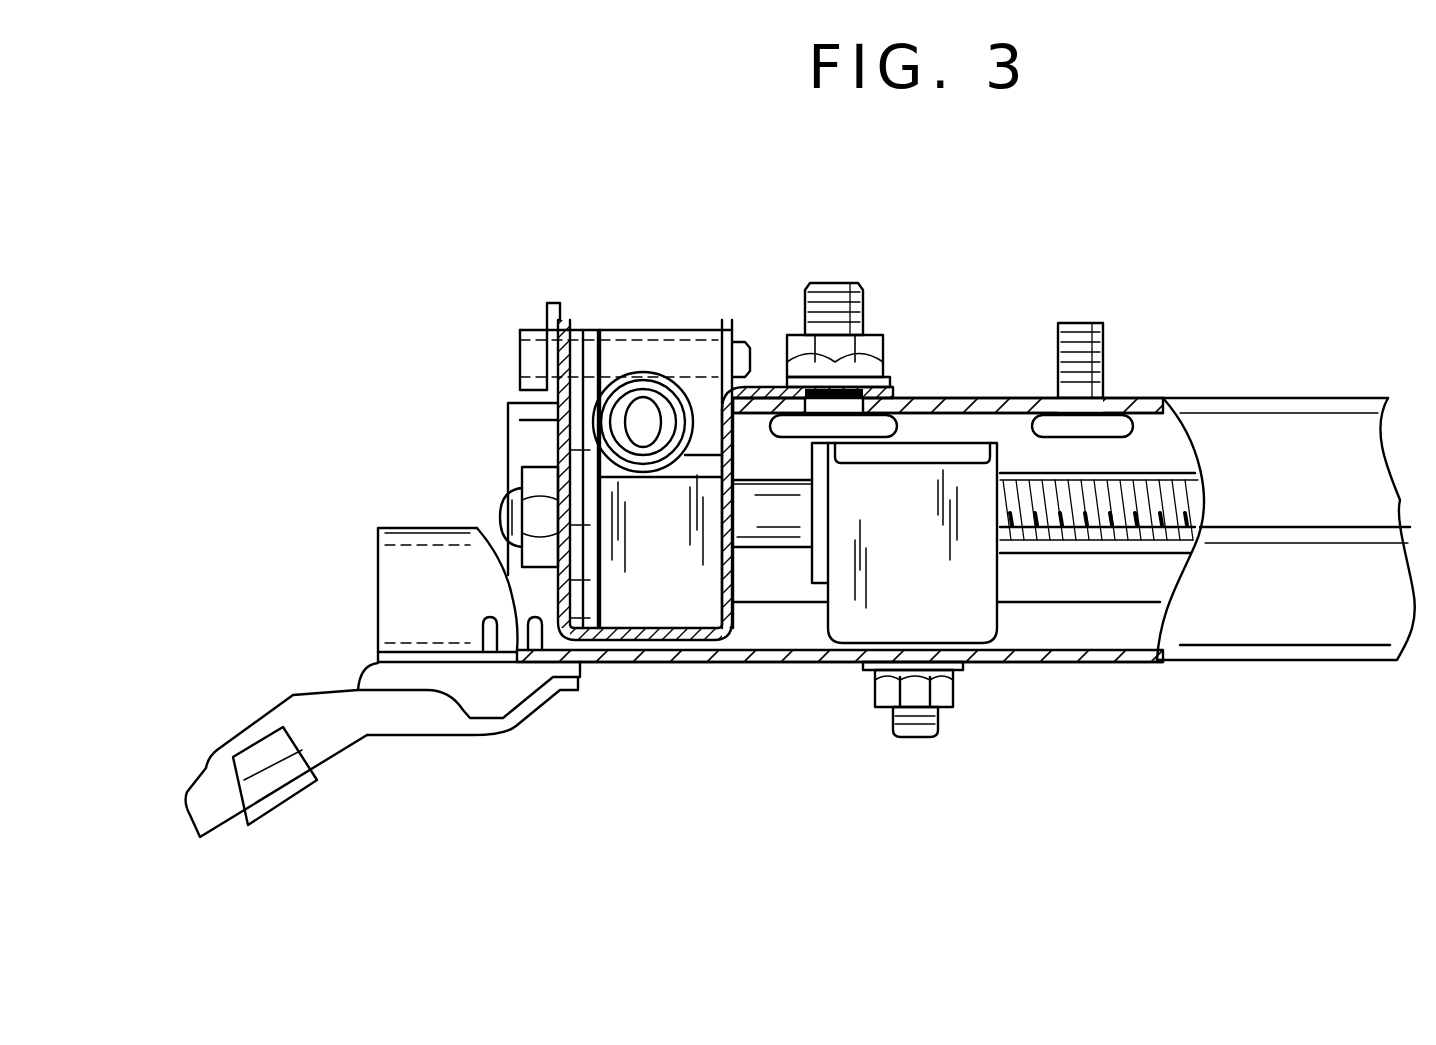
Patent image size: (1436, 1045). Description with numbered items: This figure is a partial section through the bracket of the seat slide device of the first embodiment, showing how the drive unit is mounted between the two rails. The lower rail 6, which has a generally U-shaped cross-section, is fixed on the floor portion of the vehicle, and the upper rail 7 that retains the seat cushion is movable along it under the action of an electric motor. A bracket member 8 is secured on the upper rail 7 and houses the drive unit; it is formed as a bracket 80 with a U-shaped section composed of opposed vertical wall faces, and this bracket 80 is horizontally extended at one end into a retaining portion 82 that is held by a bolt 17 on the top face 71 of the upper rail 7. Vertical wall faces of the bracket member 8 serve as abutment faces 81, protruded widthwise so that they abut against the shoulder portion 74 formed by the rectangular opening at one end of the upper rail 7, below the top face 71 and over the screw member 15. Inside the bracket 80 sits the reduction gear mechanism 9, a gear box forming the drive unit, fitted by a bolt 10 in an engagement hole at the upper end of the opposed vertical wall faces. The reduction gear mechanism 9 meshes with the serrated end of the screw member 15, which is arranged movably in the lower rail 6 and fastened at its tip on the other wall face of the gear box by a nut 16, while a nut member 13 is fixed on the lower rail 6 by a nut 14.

The lower rail 6 is at (1285, 623).
The upper rail 7 is at (1302, 443).
The bracket member 8 is at (637, 667).
The reduction gear mechanism 9 is at (627, 585).
The bolt 10 is at (530, 362).
The nut member 13 is at (967, 600).
The nut 14 is at (883, 687).
The screw member 15 is at (1152, 497).
The nut 16 is at (513, 497).
The bolt 17 is at (873, 337).
The top face 71 is at (963, 398).
The shoulder portion 74 is at (717, 430).
The bracket 80 is at (703, 663).
The abutment faces 81 is at (723, 430).
The retaining portion 82 is at (768, 387).